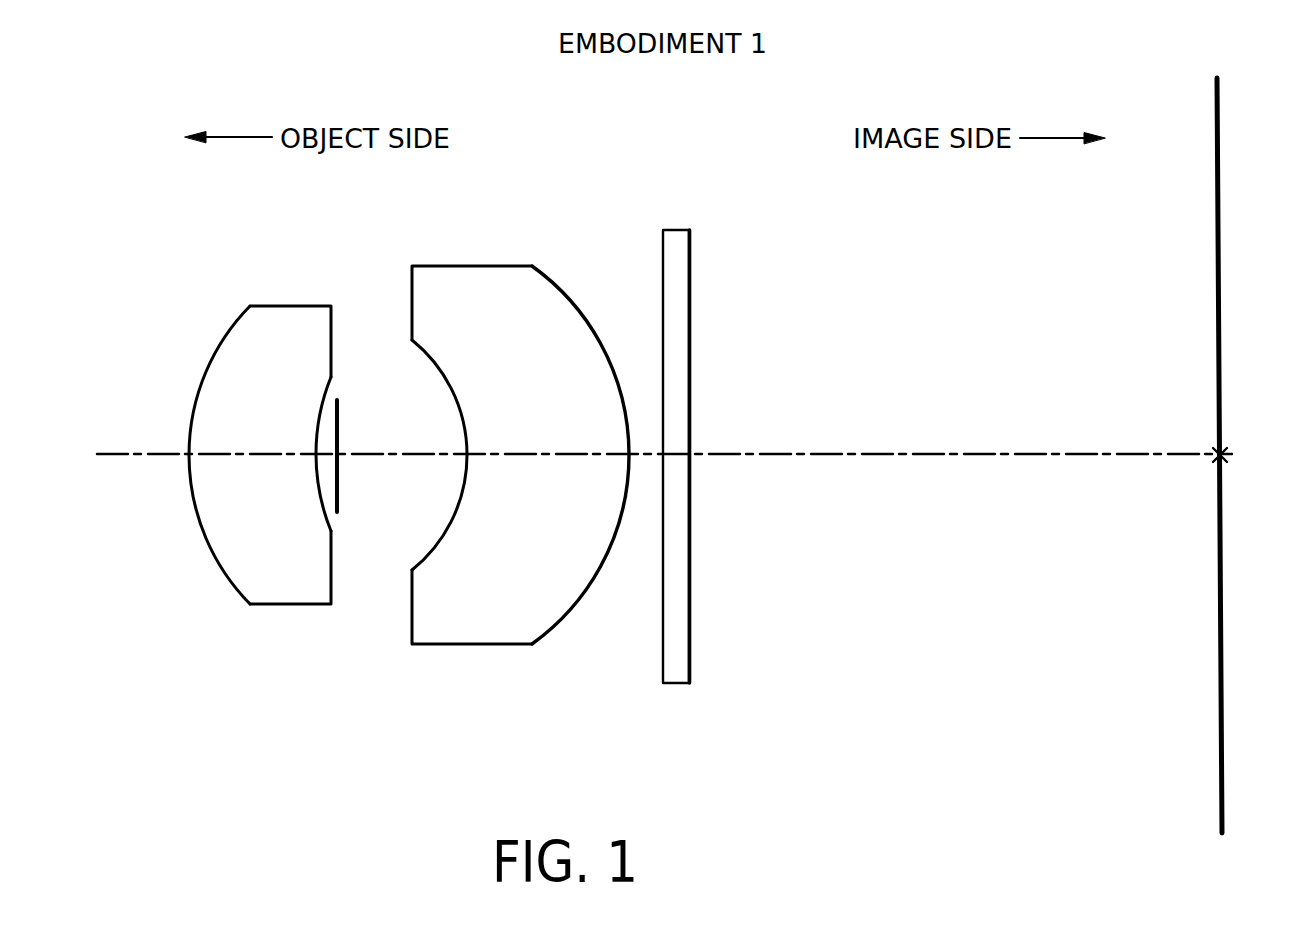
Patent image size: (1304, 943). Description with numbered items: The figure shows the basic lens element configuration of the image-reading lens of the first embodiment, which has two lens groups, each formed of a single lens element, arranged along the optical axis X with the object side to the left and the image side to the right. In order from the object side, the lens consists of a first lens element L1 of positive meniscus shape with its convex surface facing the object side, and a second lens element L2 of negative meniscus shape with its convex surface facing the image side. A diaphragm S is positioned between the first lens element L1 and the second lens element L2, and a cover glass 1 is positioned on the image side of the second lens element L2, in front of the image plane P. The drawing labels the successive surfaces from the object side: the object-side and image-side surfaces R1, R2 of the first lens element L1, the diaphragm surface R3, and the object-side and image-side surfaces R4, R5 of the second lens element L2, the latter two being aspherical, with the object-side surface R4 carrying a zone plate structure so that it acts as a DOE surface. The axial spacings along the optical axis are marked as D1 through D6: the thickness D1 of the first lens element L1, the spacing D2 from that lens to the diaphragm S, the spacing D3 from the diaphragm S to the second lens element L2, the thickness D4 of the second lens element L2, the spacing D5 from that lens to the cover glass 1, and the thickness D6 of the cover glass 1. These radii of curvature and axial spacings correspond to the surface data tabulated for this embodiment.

The cover glass 1 is at (678, 678).
The first lens element L1 is at (280, 483).
The second lens element L2 is at (518, 483).
The diaphragm S is at (340, 500).
The optical axis X is at (165, 459).
The image plane P is at (1230, 458).
The object-side surface of first lens R1 is at (225, 342).
The image-side surface of first lens R2 is at (349, 430).
The stop surface R3 is at (340, 418).
The object-side surface of second lens R4 is at (465, 413).
The image-side surface of second lens R5 is at (580, 439).
The axial thickness of first lens D1 is at (265, 448).
The axial distance from first lens to stop D2 is at (333, 459).
The axial distance from stop to second lens D3 is at (417, 462).
The axial thickness of second lens D4 is at (557, 450).
The axial distance from second lens to plate D5 is at (625, 472).
The axial thickness of parallel plate D6 is at (678, 455).